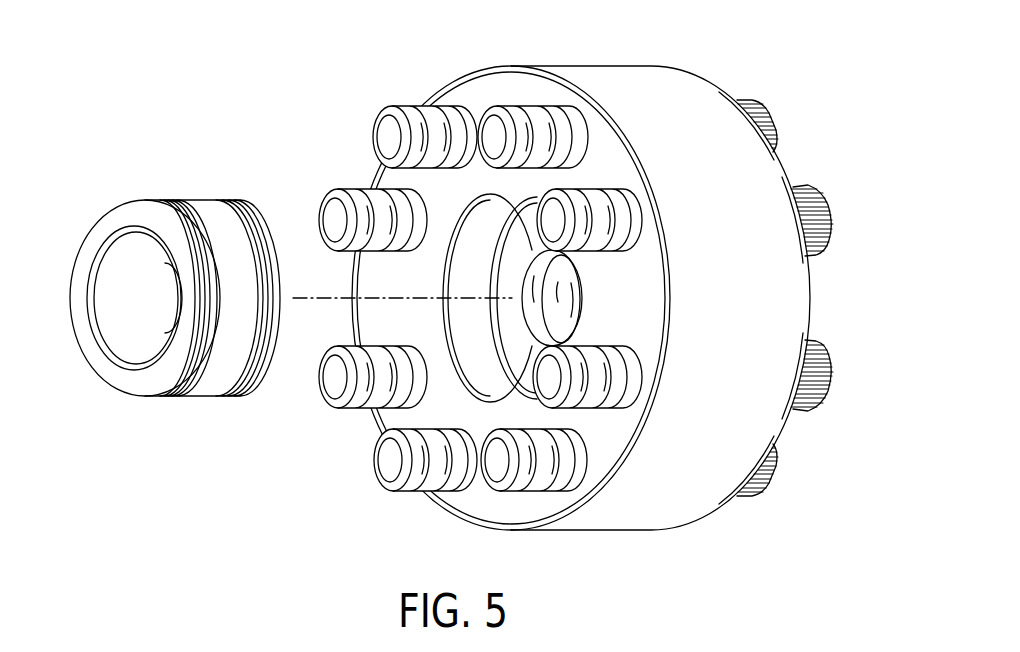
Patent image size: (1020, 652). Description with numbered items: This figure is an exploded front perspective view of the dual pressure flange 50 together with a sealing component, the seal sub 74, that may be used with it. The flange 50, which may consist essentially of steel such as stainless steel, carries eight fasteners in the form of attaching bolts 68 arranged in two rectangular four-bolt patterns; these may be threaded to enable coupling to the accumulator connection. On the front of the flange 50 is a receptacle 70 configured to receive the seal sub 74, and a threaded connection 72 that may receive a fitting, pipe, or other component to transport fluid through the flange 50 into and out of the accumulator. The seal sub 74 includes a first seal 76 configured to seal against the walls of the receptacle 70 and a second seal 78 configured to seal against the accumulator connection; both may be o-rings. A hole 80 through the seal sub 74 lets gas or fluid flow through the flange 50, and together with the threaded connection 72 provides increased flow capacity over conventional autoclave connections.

The dual pressure flange 50 is at (578, 267).
The attaching bolts 68 is at (823, 205).
The receptacle 70 is at (477, 335).
The threaded connection 72 is at (540, 280).
The seal sub 74 is at (175, 399).
The first seal 76 is at (235, 205).
The second seal 78 is at (172, 200).
The hole 80 is at (122, 325).